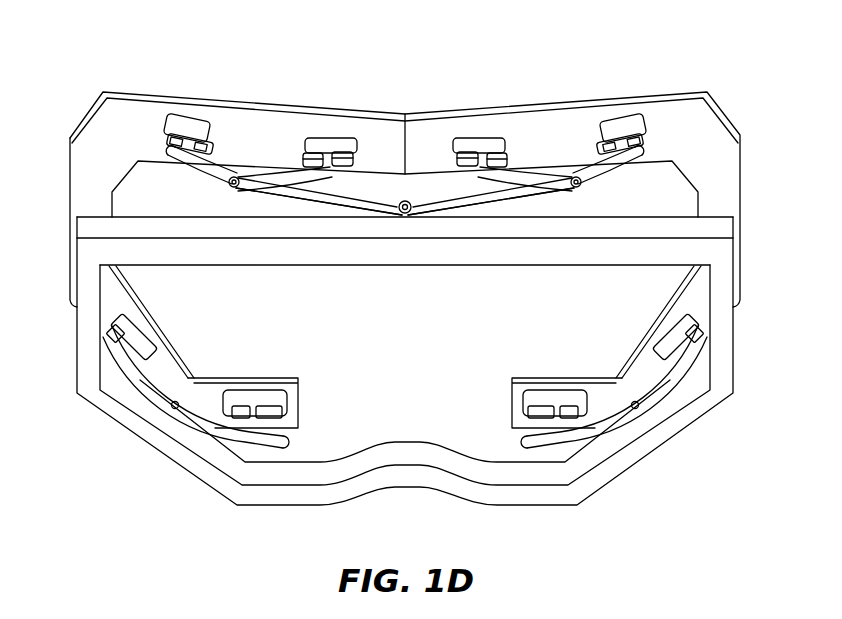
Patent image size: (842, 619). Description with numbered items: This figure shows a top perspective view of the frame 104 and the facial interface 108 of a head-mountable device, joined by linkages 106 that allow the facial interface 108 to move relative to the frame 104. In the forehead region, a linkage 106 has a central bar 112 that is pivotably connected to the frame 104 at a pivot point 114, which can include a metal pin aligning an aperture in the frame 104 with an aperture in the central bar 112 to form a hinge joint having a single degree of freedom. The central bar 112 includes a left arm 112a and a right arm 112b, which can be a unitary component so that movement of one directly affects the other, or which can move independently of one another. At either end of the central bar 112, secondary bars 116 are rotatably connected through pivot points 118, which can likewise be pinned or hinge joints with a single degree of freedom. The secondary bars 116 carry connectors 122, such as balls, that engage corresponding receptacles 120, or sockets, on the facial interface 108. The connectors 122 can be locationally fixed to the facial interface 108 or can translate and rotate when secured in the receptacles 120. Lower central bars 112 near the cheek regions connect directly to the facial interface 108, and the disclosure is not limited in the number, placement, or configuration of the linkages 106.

The frame 104 is at (198, 478).
The linkage 106 is at (530, 207).
The facial interface 108 is at (382, 130).
The central bar 112 is at (207, 410).
The left arm 112a is at (294, 195).
The right arm 112b is at (461, 208).
The pivot point 114 is at (407, 214).
The secondary bar 116 is at (216, 162).
The pivot point 118 is at (239, 178).
The receptacle 120 is at (183, 122).
The connector 122 is at (163, 133).